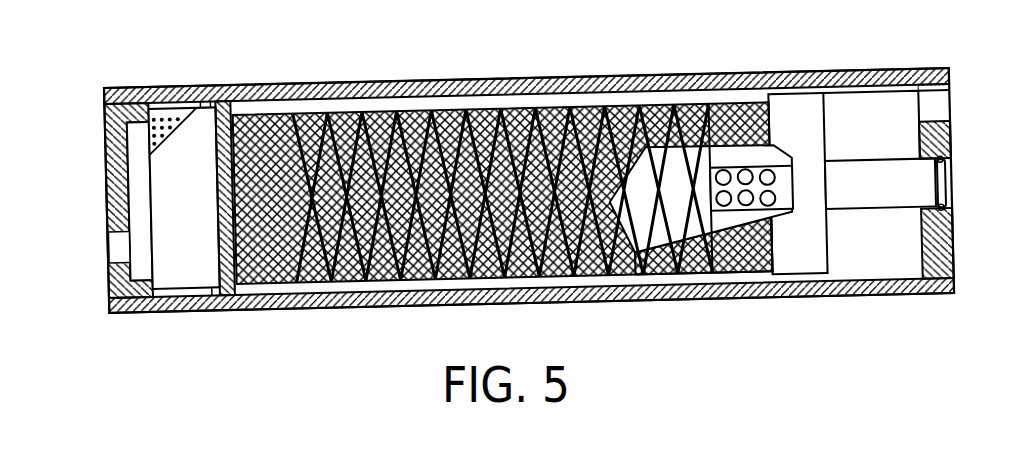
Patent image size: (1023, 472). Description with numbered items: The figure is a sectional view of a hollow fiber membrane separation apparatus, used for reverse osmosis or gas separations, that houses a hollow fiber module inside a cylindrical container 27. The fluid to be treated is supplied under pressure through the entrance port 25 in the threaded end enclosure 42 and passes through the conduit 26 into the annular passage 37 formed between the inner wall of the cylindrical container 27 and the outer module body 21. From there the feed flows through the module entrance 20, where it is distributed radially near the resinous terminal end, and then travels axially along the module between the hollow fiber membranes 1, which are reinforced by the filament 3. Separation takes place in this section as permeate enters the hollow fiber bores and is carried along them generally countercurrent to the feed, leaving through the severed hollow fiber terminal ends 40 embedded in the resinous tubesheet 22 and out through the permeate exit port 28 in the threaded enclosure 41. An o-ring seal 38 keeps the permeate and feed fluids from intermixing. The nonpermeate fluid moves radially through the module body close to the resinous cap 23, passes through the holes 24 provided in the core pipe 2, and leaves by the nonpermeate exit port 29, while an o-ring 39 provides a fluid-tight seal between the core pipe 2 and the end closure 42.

The hollow fiber membranes 1 is at (490, 118).
The core pipe 2 is at (868, 198).
The filament 3 is at (418, 114).
The module entrance 20 is at (262, 118).
The outer module body 21 is at (740, 258).
The resinous tubesheet 22 is at (197, 138).
The resinous cap 23 is at (800, 262).
The holes 24 is at (724, 172).
The entrance port 25 is at (947, 106).
The conduit 26 is at (867, 108).
The cylindrical container 27 is at (557, 76).
The permeate exit port 28 is at (110, 247).
The nonpermeate exit port 29 is at (950, 183).
The annular passage 37 is at (667, 97).
The o-ring seal 38 is at (220, 300).
The o-ring 39 is at (950, 148).
The severed hollow fiber terminal ends 40 is at (174, 128).
The threaded enclosure 41 is at (107, 140).
The threaded end enclosure 42 is at (948, 242).